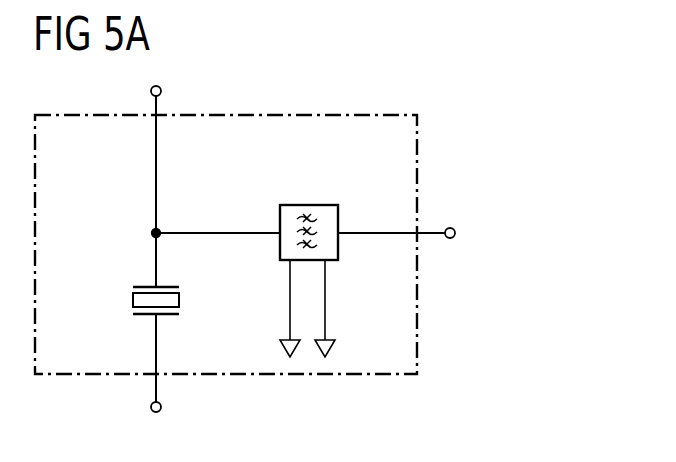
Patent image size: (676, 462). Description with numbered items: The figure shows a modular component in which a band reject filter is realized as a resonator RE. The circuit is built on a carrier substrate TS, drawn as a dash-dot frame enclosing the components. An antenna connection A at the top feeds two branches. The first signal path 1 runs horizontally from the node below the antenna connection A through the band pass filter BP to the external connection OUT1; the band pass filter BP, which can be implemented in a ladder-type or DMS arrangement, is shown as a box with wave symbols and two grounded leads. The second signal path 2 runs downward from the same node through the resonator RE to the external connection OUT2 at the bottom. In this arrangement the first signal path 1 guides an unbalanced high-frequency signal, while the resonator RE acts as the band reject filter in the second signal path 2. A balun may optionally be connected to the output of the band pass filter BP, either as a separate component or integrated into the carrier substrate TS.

The first signal path 1 is at (180, 233).
The second signal path 2 is at (158, 250).
The antenna connection A is at (141, 181).
The band pass filter BP is at (308, 205).
The resonator RE is at (131, 302).
The carrier substrate TS is at (417, 308).
The external connection OUT1 is at (452, 228).
The external connection OUT2 is at (162, 407).